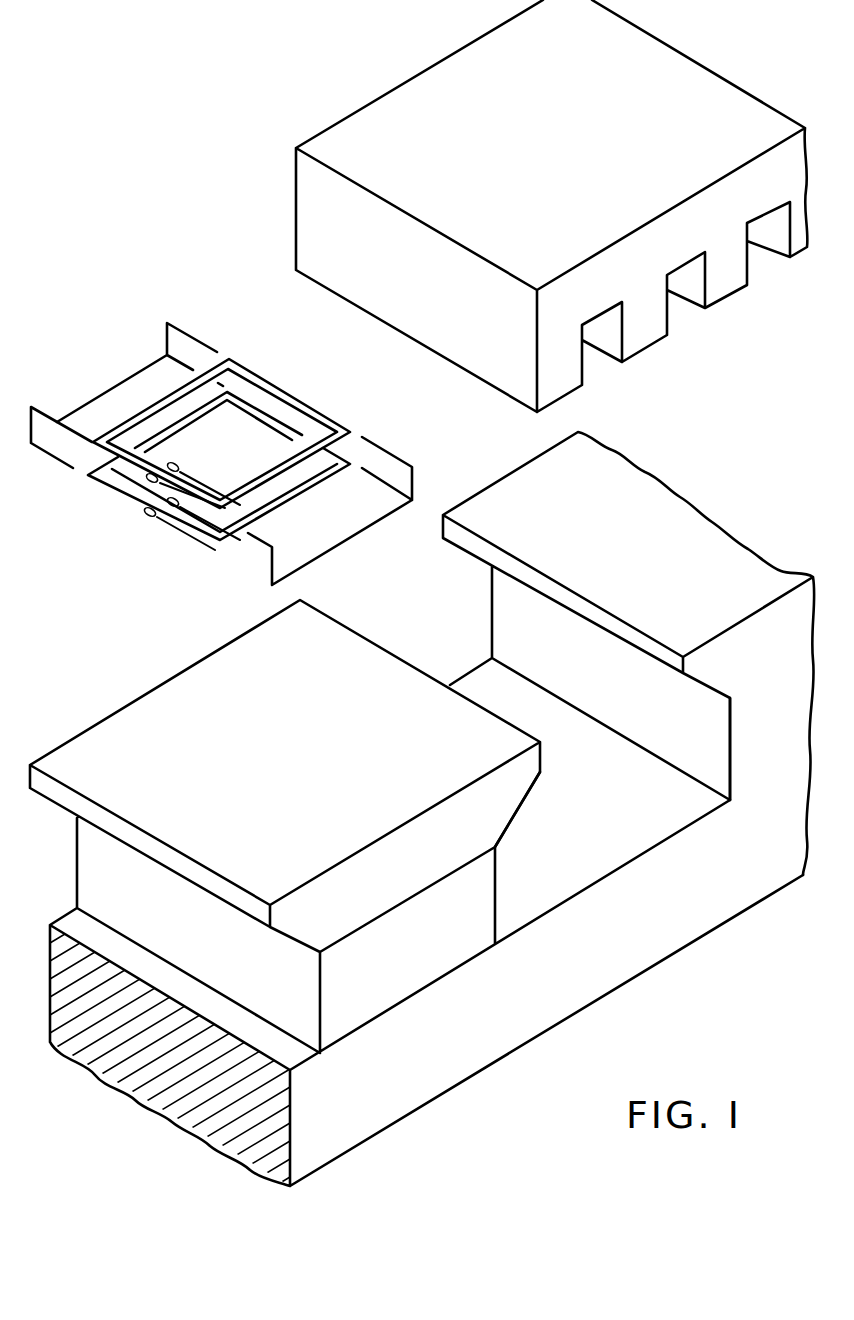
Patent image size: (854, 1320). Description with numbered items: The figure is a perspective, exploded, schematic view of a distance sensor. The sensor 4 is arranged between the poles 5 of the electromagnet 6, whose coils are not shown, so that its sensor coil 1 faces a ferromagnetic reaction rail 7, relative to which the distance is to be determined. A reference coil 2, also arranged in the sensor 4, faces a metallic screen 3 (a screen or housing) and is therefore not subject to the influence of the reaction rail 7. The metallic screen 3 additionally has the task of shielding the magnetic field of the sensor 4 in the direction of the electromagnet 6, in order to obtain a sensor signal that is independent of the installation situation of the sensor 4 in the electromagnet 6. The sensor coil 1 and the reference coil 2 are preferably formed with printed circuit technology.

The sensor coil 1 is at (122, 463).
The reference coil 2 is at (105, 475).
The metallic screen 3 is at (48, 440).
The sensor 4 is at (133, 368).
The poles 5 is at (720, 668).
The electromagnet 6 is at (498, 1008).
The ferromagnetic reaction rail 7 is at (462, 338).